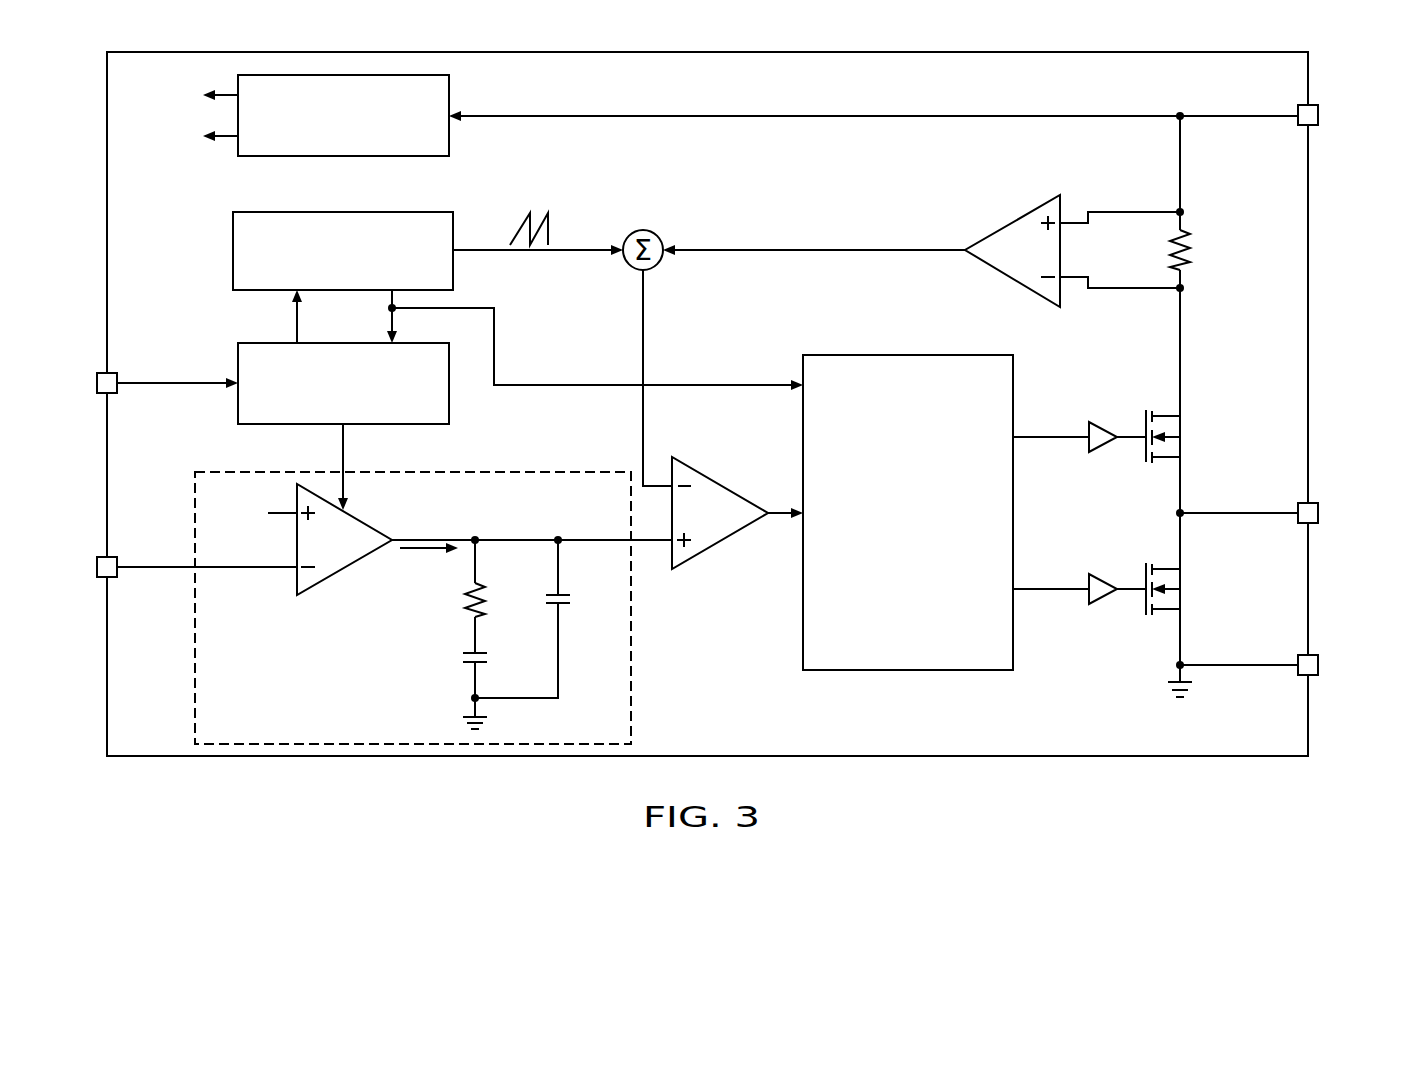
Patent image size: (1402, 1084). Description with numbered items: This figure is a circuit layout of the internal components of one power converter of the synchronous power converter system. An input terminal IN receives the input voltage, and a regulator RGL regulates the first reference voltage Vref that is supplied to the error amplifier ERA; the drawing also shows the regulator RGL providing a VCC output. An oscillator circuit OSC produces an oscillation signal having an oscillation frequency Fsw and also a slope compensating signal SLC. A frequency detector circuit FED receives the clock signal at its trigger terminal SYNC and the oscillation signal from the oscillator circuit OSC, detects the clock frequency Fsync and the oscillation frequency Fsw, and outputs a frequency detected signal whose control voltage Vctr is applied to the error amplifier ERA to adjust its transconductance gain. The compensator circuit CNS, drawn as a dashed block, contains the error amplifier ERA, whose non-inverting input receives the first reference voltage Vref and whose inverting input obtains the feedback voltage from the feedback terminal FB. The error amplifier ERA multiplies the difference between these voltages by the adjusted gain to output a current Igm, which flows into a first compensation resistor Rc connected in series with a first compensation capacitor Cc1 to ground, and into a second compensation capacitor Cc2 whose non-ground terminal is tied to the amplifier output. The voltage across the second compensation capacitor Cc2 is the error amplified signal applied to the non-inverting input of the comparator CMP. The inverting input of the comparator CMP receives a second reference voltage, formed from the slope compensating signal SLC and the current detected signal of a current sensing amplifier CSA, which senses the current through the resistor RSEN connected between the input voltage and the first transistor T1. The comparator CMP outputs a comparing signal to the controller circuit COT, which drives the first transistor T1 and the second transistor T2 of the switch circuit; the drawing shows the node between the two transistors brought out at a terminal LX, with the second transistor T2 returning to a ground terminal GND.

The regulator RGL is at (449, 90).
The oscillator circuit OSC is at (453, 270).
The slope compensating signal SLC is at (536, 210).
The frequency detector circuit FED is at (449, 400).
The error amplifier ERA is at (345, 571).
The compensator circuit CNS is at (631, 668).
The first compensation resistor Rc is at (495, 594).
The first compensation capacitor Cc1 is at (500, 685).
The second compensation capacitor Cc2 is at (548, 617).
The comparator CMP is at (728, 487).
The controller circuit COT is at (907, 670).
The current sensing amplifier CSA is at (1013, 221).
The resistor RSEN is at (1220, 250).
The first transistor T1 is at (1182, 436).
The second transistor T2 is at (1183, 589).
The input terminal IN is at (1326, 115).
The switching node pin LX is at (1272, 513).
The ground pin GND is at (1285, 665).
The trigger terminal SYNC is at (66, 385).
The feedback terminal FB is at (178, 565).
The first reference voltage Vref is at (219, 305).
The supply voltage VCC is at (188, 135).
The control voltage Vctr is at (410, 338).
The oscillation frequency Fsw is at (569, 340).
The clock frequency Fsync is at (177, 367).
The current Igm is at (429, 564).